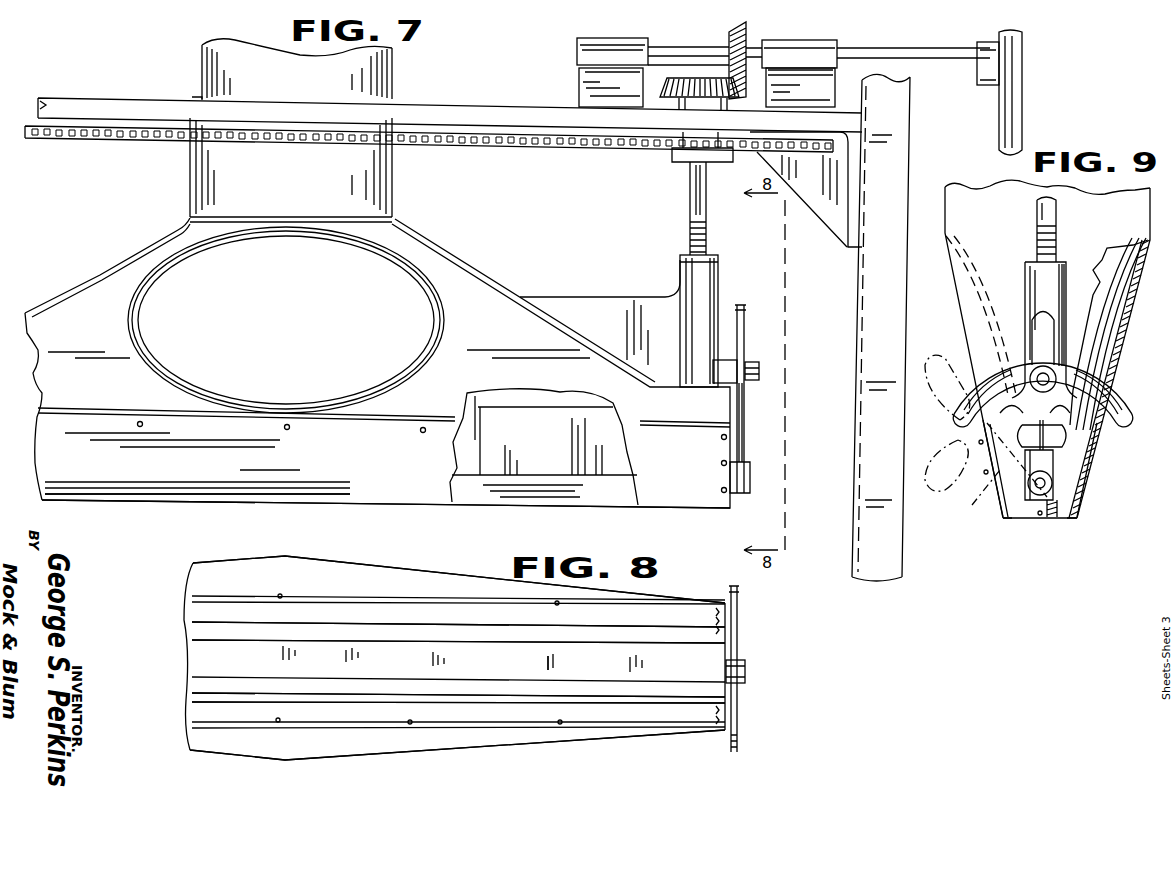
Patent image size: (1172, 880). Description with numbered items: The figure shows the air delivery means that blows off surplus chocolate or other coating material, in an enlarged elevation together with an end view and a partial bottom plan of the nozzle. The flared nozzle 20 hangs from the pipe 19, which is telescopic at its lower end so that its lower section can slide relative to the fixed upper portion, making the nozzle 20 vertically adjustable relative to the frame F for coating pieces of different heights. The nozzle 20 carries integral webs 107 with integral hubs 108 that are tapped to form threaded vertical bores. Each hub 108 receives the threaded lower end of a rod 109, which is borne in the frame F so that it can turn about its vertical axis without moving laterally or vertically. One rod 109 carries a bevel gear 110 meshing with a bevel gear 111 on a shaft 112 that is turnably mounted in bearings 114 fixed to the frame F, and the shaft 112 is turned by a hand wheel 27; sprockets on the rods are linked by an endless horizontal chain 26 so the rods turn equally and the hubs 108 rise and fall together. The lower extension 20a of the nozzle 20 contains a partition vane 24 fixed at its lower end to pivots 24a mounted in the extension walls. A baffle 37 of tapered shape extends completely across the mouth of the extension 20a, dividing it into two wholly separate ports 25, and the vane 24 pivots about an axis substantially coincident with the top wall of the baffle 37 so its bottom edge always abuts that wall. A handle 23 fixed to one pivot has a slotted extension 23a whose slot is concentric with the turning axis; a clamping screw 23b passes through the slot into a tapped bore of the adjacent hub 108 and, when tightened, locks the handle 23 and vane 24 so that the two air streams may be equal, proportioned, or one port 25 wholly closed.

In FIG. 7, the frame F is at (490, 107).
In FIG. 7, the pipe 19 is at (390, 72).
In FIG. 7, the nozzle 20 is at (470, 278).
In FIG. 8, the nozzle 20 is at (377, 746).
In FIG. 9, the nozzle 20 is at (1146, 305).
In FIG. 7, the extension 20a is at (405, 485).
In FIG. 8, the extension 20a is at (373, 606).
In FIG. 9, the extension 20a is at (1082, 490).
In FIG. 7, the handle 23 is at (746, 330).
In FIG. 9, the handle 23 is at (1043, 326).
In FIG. 7, the slotted extension 23a is at (742, 437).
In FIG. 8, the slotted extension 23a is at (740, 600).
In FIG. 9, the slotted extension 23a is at (1112, 405).
In FIG. 7, the clamping screw 23b is at (760, 373).
In FIG. 9, the clamping screw 23b is at (1056, 379).
In FIG. 7, the partition vane 24 is at (548, 465).
In FIG. 9, the partition vane 24 is at (1066, 433).
In FIG. 8, the pivots 24a is at (746, 668).
In FIG. 9, the pivots 24a is at (1028, 485).
In FIG. 8, the ports 25 is at (712, 645).
In FIG. 9, the ports 25 is at (1074, 518).
In FIG. 7, the endless horizontal chain 26 is at (650, 150).
In FIG. 7, the hand wheel 27 is at (1012, 122).
In FIG. 7, the baffle 37 is at (598, 495).
In FIG. 8, the baffle 37 is at (577, 668).
In FIG. 9, the baffle 37 is at (1050, 503).
In FIG. 7, the webs 107 is at (588, 310).
In FIG. 7, the hubs 108 is at (708, 288).
In FIG. 9, the hubs 108 is at (1060, 270).
In FIG. 7, the rod 109 is at (695, 229).
In FIG. 9, the rod 109 is at (1052, 221).
In FIG. 7, the bevel gear 110 is at (680, 88).
In FIG. 7, the bevel gear 111 is at (729, 40).
In FIG. 7, the shaft 112 is at (893, 57).
In FIG. 7, the bearings 114 is at (580, 78).